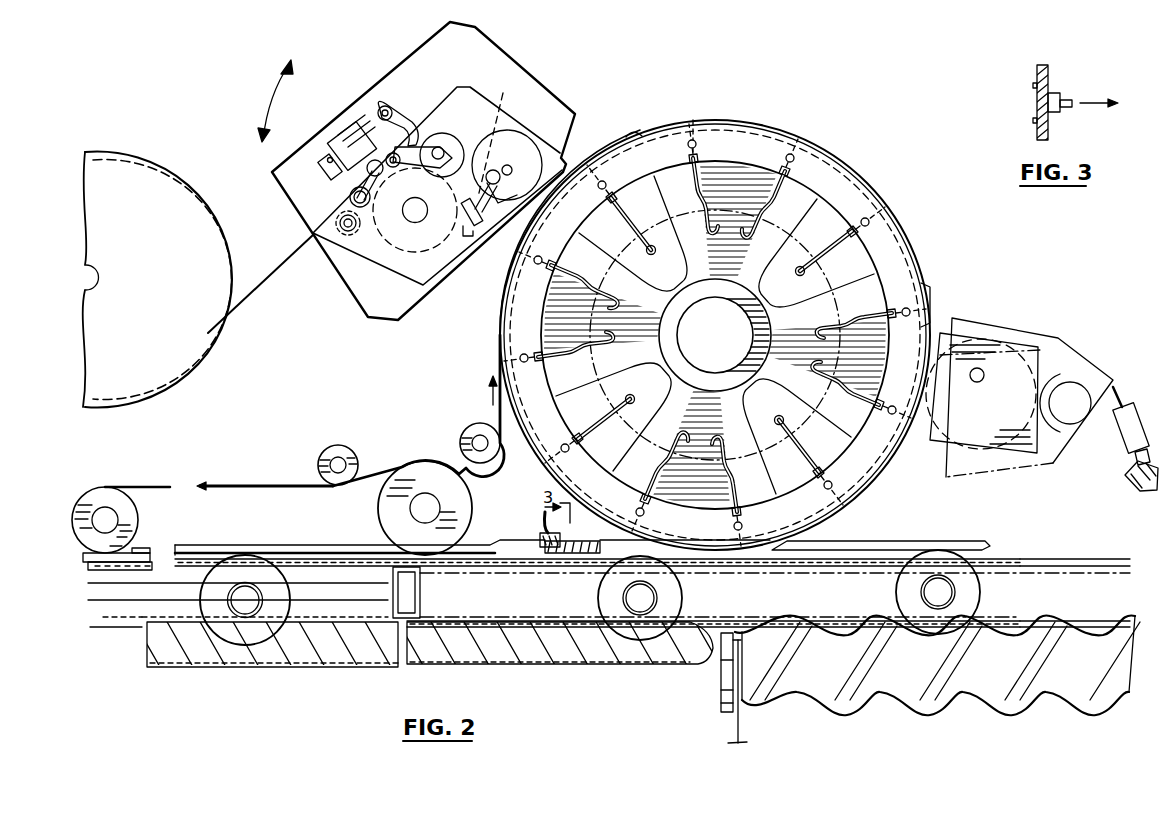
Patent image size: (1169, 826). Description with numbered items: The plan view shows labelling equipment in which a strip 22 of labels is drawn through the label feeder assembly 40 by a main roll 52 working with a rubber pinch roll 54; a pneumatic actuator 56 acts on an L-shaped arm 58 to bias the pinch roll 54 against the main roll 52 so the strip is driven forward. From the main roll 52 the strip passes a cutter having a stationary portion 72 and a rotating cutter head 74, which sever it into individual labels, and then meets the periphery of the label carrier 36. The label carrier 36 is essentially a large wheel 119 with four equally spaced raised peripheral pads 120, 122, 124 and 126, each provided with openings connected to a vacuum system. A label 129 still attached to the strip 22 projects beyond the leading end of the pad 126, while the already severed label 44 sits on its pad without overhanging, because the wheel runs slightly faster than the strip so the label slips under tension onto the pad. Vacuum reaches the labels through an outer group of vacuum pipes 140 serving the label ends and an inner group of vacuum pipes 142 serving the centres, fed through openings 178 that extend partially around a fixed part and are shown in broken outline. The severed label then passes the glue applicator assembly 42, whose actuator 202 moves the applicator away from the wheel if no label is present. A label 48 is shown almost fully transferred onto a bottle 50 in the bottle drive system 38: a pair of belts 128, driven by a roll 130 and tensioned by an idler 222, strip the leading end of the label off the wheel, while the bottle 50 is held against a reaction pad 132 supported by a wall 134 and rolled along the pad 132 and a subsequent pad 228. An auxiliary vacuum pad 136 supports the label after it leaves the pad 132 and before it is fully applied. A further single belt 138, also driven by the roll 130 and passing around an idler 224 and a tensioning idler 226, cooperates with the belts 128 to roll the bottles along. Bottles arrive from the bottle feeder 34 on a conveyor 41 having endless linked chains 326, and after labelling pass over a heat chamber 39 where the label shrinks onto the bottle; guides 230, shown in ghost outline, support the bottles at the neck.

In FIG. 2, the strip 22 is at (268, 280).
In FIG. 2, the label feeder assembly 40 is at (537, 77).
In FIG. 2, the pneumatic actuator 56 is at (345, 130).
In FIG. 2, the L-shaped arm 58 is at (398, 118).
In FIG. 2, the rubber pinch roll 54 is at (448, 135).
In FIG. 2, the main roll 52 is at (398, 258).
In FIG. 2, the rotating cutter head 74 is at (507, 134).
In FIG. 2, the stationary portion 72 is at (472, 242).
In FIG. 2, the label carrier 36 is at (870, 161).
In FIG. 2, the label 44 is at (880, 196).
In FIG. 2, the raised peripheral pad 120 is at (905, 228).
In FIG. 2, the wheel 119 is at (903, 274).
In FIG. 2, the raised peripheral pad 122 is at (926, 300).
In FIG. 2, the label 129 is at (596, 142).
In FIG. 2, the raised peripheral pad 126 is at (632, 140).
In FIG. 2, the openings 178 is at (732, 139).
In FIG. 2, the outer group of vacuum pipes 140 is at (636, 222).
In FIG. 2, the inner group of vacuum pipes 142 is at (598, 268).
In FIG. 2, the glue applicator assembly 42 is at (1080, 340).
In FIG. 2, the actuator 202 is at (1140, 405).
In FIG. 2, the bottle drive system 38 is at (408, 434).
In FIG. 2, the idler 224 is at (110, 500).
In FIG. 2, the single belt 138 is at (262, 485).
In FIG. 2, the tensioning idler 226 is at (328, 450).
In FIG. 2, the roll 130 is at (432, 470).
In FIG. 2, the idler 222 is at (476, 425).
In FIG. 2, the belts 128 is at (489, 545).
In FIG. 3, the belts 128 is at (1036, 120).
In FIG. 2, the auxiliary vacuum pad 136 is at (617, 542).
In FIG. 3, the auxiliary vacuum pad 136 is at (1063, 80).
In FIG. 2, the guides 230 is at (880, 562).
In FIG. 2, the endless linked chains 326 is at (778, 617).
In FIG. 2, the heat chamber 39 is at (318, 613).
In FIG. 2, the pad 228 is at (366, 648).
In FIG. 2, the wall 134 is at (510, 666).
In FIG. 2, the reaction pad 132 is at (565, 646).
In FIG. 2, the bottle 50 is at (646, 640).
In FIG. 2, the label 48 is at (733, 553).
In FIG. 2, the conveyor 41 is at (1048, 560).
In FIG. 2, the bottle feeder 34 is at (1128, 638).
In FIG. 2, the raised peripheral pad 124 is at (770, 548).